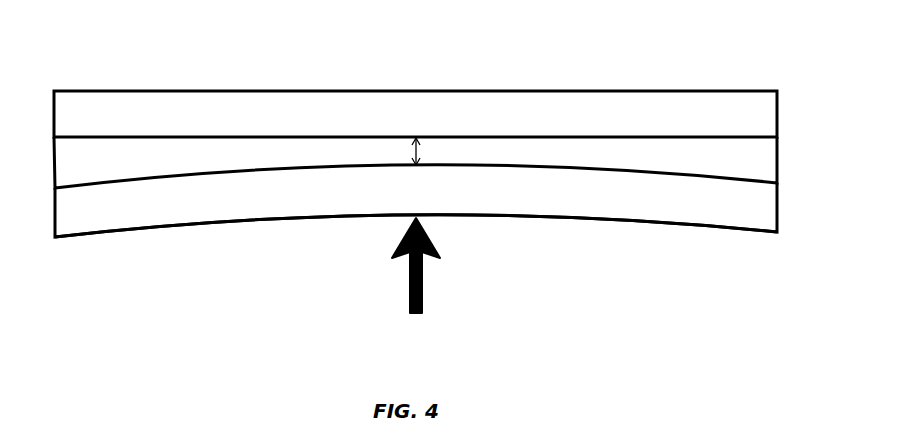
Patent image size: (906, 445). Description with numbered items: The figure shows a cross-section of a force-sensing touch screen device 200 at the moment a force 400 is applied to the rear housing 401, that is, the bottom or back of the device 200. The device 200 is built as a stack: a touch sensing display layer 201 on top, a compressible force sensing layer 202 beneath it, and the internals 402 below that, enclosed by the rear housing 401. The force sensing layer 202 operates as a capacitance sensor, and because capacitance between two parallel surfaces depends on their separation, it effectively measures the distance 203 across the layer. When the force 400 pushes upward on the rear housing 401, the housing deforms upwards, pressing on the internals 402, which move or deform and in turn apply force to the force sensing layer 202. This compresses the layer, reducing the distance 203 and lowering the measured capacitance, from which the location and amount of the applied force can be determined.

The touch screen device 200 is at (415, 130).
The touch sensing display layer 201 is at (415, 114).
The force sensing layer 202 is at (415, 162).
The distance 203 is at (399, 151).
The force 400 is at (430, 265).
The rear housing 401 is at (115, 243).
The internals 402 is at (416, 210).